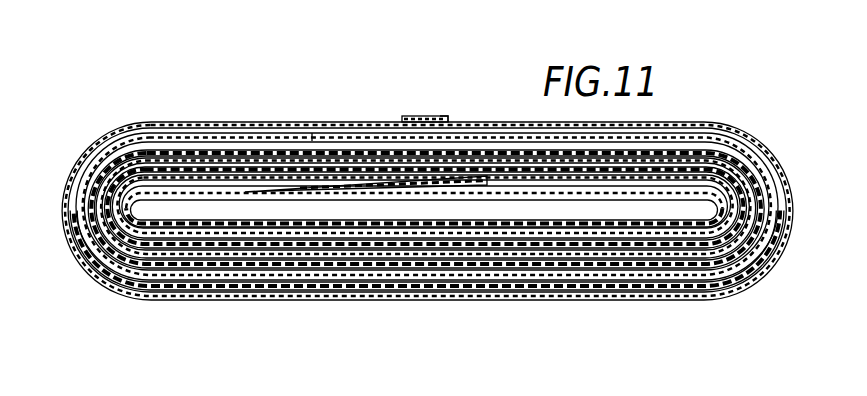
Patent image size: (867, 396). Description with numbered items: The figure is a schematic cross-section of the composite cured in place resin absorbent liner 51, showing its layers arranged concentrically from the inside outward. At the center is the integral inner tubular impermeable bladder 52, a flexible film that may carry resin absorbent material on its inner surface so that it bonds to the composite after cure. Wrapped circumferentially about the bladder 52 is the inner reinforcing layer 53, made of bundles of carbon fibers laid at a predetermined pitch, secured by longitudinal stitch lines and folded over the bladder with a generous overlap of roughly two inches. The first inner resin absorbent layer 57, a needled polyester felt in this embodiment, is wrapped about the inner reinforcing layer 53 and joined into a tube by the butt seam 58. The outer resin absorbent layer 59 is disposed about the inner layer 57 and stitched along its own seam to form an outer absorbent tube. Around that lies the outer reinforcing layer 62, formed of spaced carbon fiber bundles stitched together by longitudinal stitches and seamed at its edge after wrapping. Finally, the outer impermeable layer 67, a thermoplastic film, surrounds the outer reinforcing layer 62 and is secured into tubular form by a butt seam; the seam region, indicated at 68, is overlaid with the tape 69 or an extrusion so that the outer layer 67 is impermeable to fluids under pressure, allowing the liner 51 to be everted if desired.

The composite cured in place resin absorbent liner 51 is at (337, 315).
The inner tubular impermeable bladder 52 is at (700, 245).
The inner reinforcing layer 53 is at (730, 205).
The first inner resin absorbent layer 57 is at (735, 165).
The butt seam 58 is at (303, 135).
The outer resin absorbent layer 59 is at (143, 150).
The outer reinforcing layer 62 is at (718, 128).
The outer impermeable layer 67 is at (62, 206).
The terminal tab 68 is at (413, 116).
The tape 69 is at (447, 120).